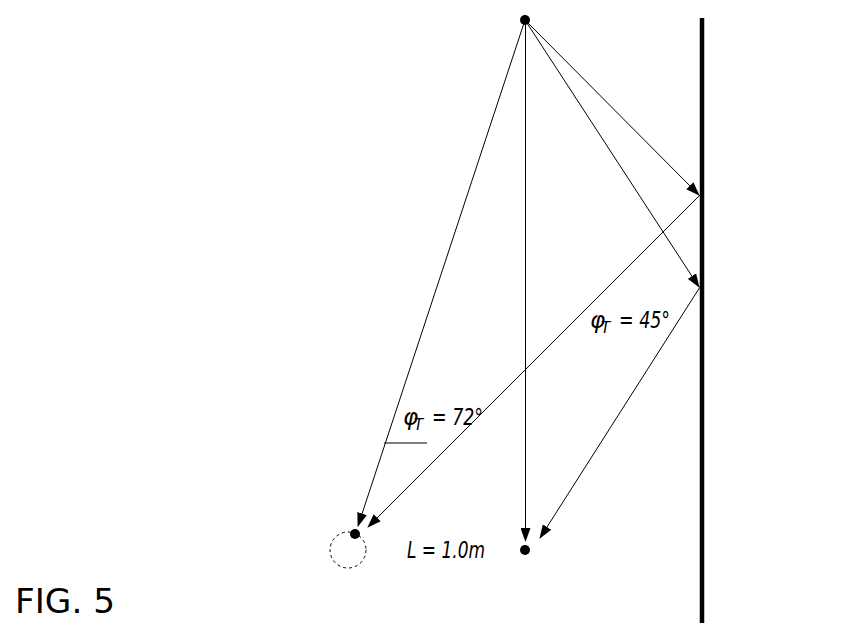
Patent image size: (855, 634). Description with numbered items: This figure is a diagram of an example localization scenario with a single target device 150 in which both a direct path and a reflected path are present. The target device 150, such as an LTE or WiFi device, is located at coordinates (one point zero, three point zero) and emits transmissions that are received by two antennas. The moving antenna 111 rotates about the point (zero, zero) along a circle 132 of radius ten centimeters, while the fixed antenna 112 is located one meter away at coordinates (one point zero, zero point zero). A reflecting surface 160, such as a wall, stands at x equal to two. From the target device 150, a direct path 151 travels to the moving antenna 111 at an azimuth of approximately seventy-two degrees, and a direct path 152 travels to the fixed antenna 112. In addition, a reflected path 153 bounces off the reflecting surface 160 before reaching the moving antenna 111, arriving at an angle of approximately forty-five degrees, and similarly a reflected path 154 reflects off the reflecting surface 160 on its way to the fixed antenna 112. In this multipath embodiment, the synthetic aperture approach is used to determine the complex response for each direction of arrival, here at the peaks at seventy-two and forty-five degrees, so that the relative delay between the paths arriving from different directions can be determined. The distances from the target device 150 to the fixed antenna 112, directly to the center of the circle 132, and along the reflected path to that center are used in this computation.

The moving antenna 111 is at (350, 530).
The fixed antenna 112 is at (523, 556).
The circle 132 is at (328, 549).
The target device 150 is at (560, 0).
The direct path 151 is at (475, 172).
The direct path 152 is at (523, 482).
The reflected path 153 is at (622, 116).
The reflected path 154 is at (612, 158).
The reflecting surface 160 is at (703, 377).